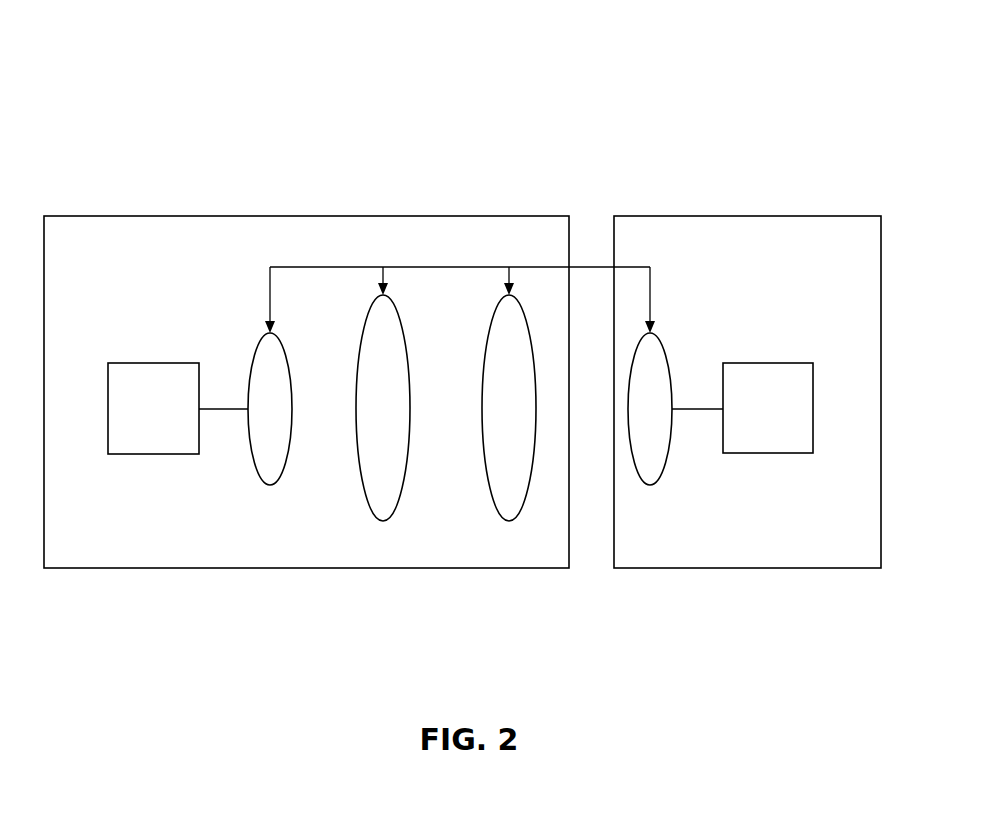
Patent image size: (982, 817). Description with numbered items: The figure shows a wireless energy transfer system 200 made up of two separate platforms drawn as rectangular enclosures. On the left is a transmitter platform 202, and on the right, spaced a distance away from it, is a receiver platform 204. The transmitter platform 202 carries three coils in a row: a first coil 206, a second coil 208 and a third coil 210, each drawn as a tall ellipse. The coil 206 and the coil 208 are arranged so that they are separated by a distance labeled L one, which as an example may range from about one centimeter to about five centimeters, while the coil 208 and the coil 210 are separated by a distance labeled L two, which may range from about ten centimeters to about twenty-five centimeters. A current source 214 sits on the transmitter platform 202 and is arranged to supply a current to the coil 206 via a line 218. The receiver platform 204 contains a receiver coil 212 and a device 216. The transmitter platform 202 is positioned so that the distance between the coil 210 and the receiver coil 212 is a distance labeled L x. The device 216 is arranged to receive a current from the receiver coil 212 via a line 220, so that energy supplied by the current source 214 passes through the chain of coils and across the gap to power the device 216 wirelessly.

The wireless energy transfer system 200 is at (777, 56).
The transmitter platform 202 is at (238, 216).
The receiver platform 204 is at (751, 216).
The coil 206 is at (272, 485).
The coil 208 is at (383, 521).
The coil 210 is at (509, 521).
The receiver coil 212 is at (652, 485).
The current source 214 is at (153, 408).
The device 216 is at (768, 408).
The line 218 is at (231, 409).
The line 220 is at (697, 409).